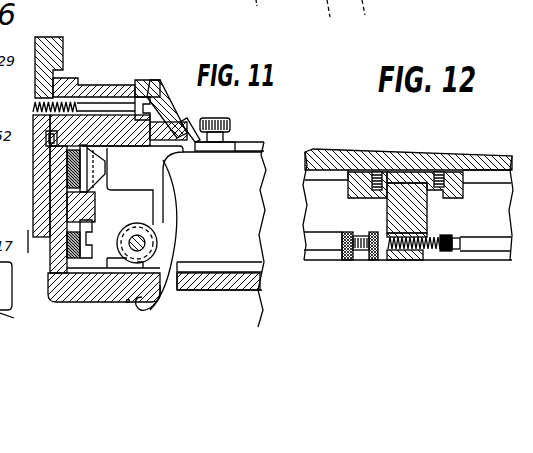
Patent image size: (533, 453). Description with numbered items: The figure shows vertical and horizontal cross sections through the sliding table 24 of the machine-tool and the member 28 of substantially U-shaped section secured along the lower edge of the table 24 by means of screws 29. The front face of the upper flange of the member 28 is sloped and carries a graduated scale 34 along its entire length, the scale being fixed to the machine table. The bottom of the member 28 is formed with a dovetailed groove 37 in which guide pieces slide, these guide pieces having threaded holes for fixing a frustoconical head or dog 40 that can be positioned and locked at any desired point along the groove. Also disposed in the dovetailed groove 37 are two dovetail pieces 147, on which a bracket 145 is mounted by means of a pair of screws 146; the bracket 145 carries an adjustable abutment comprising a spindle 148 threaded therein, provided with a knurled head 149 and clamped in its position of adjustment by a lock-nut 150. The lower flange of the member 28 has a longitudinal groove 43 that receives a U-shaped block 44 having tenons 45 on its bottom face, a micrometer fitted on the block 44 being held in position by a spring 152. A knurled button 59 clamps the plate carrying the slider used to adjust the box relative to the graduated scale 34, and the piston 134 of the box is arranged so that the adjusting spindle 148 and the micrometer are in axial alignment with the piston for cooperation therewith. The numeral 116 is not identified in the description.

In FIG. 11, the table 24 is at (63, 50).
In FIG. 11, the member 28 is at (100, 90).
In FIG. 11, the screws 29 is at (112, 108).
In FIG. 11, the graduated scale 34 is at (175, 110).
In FIG. 11, the knurled button 59 is at (228, 125).
In FIG. 11, the dovetailed groove 37 is at (70, 263).
In FIG. 12, the dovetailed groove 37 is at (315, 174).
In FIG. 11, the piston 134 is at (132, 185).
In FIG. 11, the frustoconical head 40 is at (92, 172).
In FIG. 11, the dovetail pieces 147 is at (60, 265).
In FIG. 12, the dovetail pieces 147 is at (348, 180).
In FIG. 11, the screws 146 is at (88, 233).
In FIG. 12, the screws 146 is at (375, 192).
In FIG. 11, the spindle 148 is at (153, 262).
In FIG. 12, the spindle 148 is at (438, 255).
In FIG. 11, the U-shaped block 44 is at (152, 263).
In FIG. 11, the longitudinal groove 43 is at (142, 302).
In FIG. 12, the longitudinal groove 43 is at (322, 248).
In FIG. 11, the bracket 145 is at (108, 260).
In FIG. 12, the bracket 145 is at (413, 222).
In FIG. 11, the tenons 45 is at (128, 303).
In FIG. 11, the spring 152 is at (162, 308).
In FIG. 11, the adjacent part 116 is at (22, 321).
In FIG. 12, the knurled head 149 is at (348, 260).
In FIG. 12, the lock-nut 150 is at (373, 260).